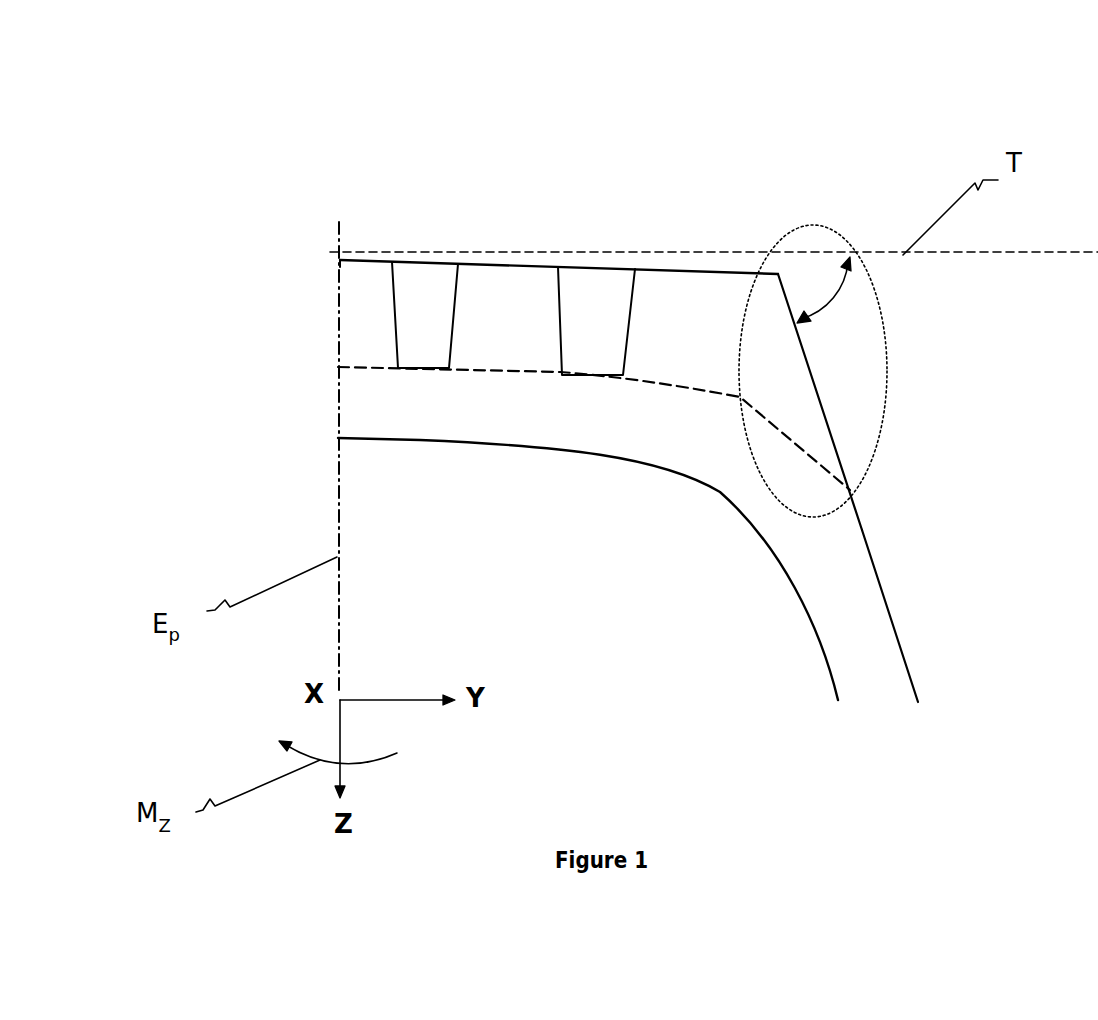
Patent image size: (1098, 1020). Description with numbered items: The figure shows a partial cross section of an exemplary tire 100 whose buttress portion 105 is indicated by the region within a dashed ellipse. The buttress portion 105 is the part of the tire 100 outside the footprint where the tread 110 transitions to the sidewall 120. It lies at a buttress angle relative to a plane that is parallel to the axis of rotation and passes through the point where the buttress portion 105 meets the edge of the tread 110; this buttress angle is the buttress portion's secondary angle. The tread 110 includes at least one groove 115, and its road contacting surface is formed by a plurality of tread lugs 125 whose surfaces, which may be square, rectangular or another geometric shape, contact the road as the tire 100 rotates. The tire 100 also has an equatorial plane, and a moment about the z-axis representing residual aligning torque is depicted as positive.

The tire 100 is at (400, 145).
The buttress portion 105 is at (883, 318).
The tread 110 is at (502, 310).
The groove 115 is at (592, 303).
The sidewall 120 is at (895, 628).
The tread lugs 125 is at (682, 272).